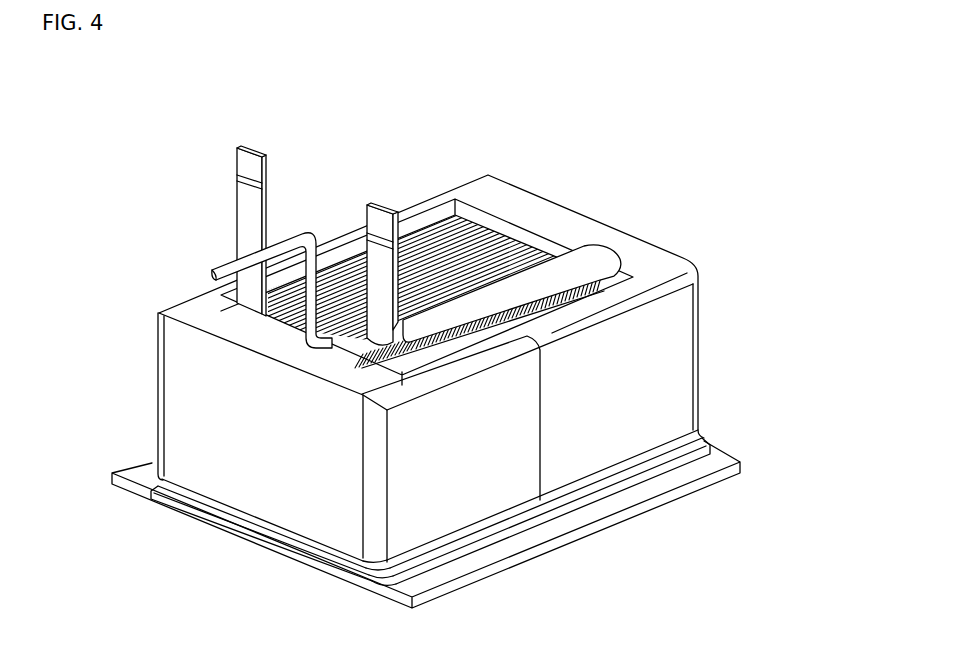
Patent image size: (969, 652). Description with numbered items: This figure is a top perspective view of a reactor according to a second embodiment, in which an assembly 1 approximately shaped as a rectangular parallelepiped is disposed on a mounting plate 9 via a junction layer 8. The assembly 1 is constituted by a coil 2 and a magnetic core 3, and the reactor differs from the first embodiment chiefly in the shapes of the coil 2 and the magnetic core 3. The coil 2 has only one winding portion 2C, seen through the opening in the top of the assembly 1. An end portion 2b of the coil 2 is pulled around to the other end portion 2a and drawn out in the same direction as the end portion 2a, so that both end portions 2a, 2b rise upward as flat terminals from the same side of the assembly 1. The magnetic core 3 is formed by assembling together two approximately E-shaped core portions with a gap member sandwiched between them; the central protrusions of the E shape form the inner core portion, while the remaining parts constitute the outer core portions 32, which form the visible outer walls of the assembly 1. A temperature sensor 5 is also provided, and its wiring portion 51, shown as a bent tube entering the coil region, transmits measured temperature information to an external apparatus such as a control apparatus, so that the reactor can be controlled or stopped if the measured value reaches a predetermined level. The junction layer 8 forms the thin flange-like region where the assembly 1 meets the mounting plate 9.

The assembly 1 is at (648, 224).
The coil 2 is at (413, 258).
The end portion 2a is at (247, 167).
The end portion 2b is at (376, 222).
The winding portion 2C is at (453, 238).
The magnetic core 3 is at (458, 376).
The outer core portion 32 is at (674, 352).
The temperature sensor 5 is at (222, 290).
The wiring portion 51 is at (216, 270).
The junction layer 8 is at (155, 478).
The mounting plate 9 is at (617, 500).